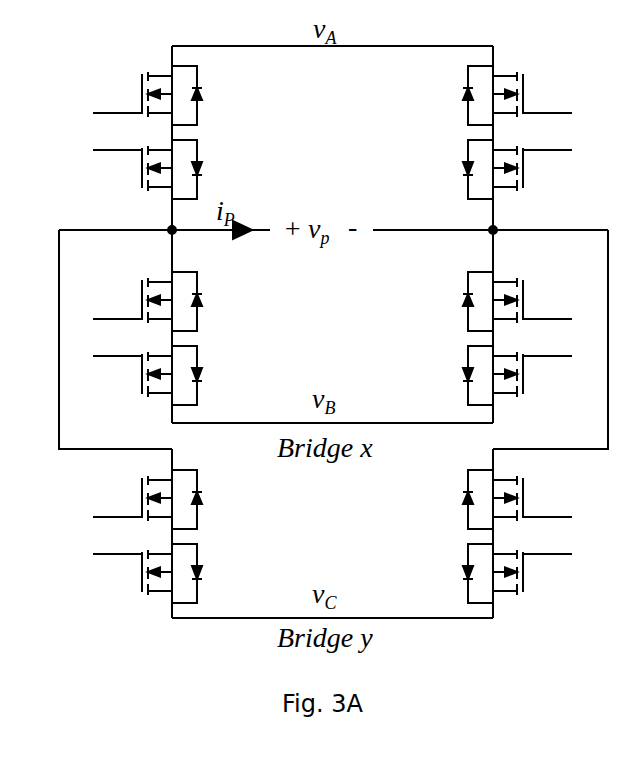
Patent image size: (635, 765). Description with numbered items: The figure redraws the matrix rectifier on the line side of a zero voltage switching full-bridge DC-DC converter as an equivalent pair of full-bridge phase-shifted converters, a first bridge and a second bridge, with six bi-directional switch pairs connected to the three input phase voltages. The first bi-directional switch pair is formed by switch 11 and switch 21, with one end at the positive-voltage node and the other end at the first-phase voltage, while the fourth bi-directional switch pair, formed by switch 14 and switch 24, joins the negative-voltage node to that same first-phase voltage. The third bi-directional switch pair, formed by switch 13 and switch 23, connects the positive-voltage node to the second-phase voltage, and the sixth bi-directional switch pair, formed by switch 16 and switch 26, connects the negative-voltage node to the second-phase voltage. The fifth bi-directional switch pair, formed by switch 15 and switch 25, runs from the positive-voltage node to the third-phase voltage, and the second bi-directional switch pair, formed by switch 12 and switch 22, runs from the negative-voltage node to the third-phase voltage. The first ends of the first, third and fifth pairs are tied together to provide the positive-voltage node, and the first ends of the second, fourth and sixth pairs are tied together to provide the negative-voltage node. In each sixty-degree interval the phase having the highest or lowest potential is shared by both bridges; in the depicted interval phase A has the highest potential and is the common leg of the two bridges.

The switch S11 11 is at (145, 95).
The switch S21 21 is at (145, 169).
The switch S24 24 is at (518, 95).
The switch S14 14 is at (518, 169).
The switch S23 23 is at (145, 301).
The switch S13 13 is at (145, 375).
The switch S16 16 is at (518, 301).
The switch S26 26 is at (518, 375).
The switch S25 25 is at (145, 499).
The switch S15 15 is at (145, 573).
The switch S12 12 is at (518, 499).
The switch S22 22 is at (518, 573).